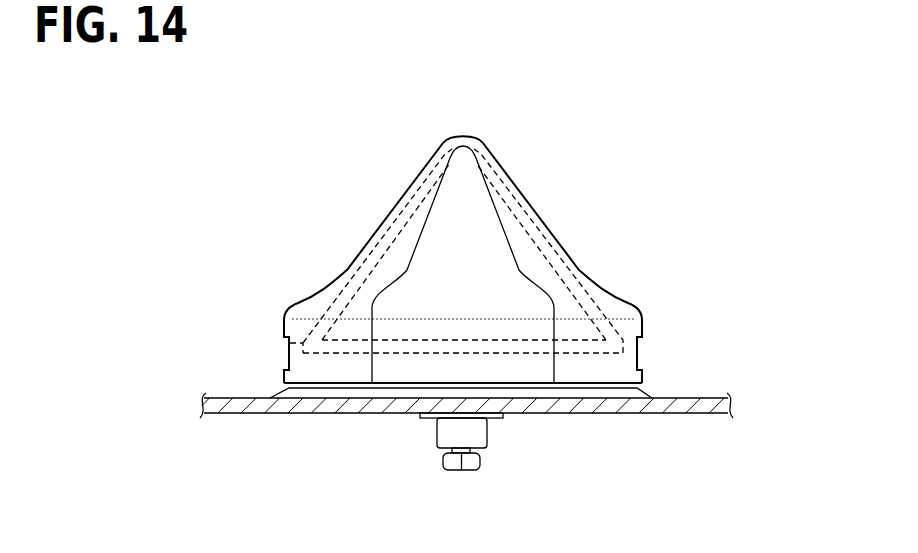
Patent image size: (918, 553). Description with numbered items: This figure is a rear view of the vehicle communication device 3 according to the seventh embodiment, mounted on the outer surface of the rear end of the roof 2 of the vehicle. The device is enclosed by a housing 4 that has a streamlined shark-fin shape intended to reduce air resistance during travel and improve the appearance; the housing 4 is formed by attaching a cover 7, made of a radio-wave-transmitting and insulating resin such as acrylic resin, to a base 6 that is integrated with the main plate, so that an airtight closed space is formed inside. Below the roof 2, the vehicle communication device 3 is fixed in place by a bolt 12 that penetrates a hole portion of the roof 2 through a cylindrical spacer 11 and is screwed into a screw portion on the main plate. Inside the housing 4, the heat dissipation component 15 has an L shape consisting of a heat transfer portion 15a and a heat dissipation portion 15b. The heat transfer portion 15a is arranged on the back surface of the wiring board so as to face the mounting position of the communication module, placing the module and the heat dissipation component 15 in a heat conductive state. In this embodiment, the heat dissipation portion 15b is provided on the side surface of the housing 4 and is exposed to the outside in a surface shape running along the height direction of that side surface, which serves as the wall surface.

The roof 2 is at (672, 415).
The vehicle communication device 3 is at (549, 167).
The housing 4 is at (386, 231).
The base 6 is at (651, 397).
The cover 7 is at (645, 331).
The cylindrical spacer 11 is at (488, 434).
The bolt 12 is at (462, 471).
The heat dissipation component 15 is at (284, 343).
The heat transfer portion 15a is at (576, 355).
The heat dissipation portion 15b is at (568, 264).